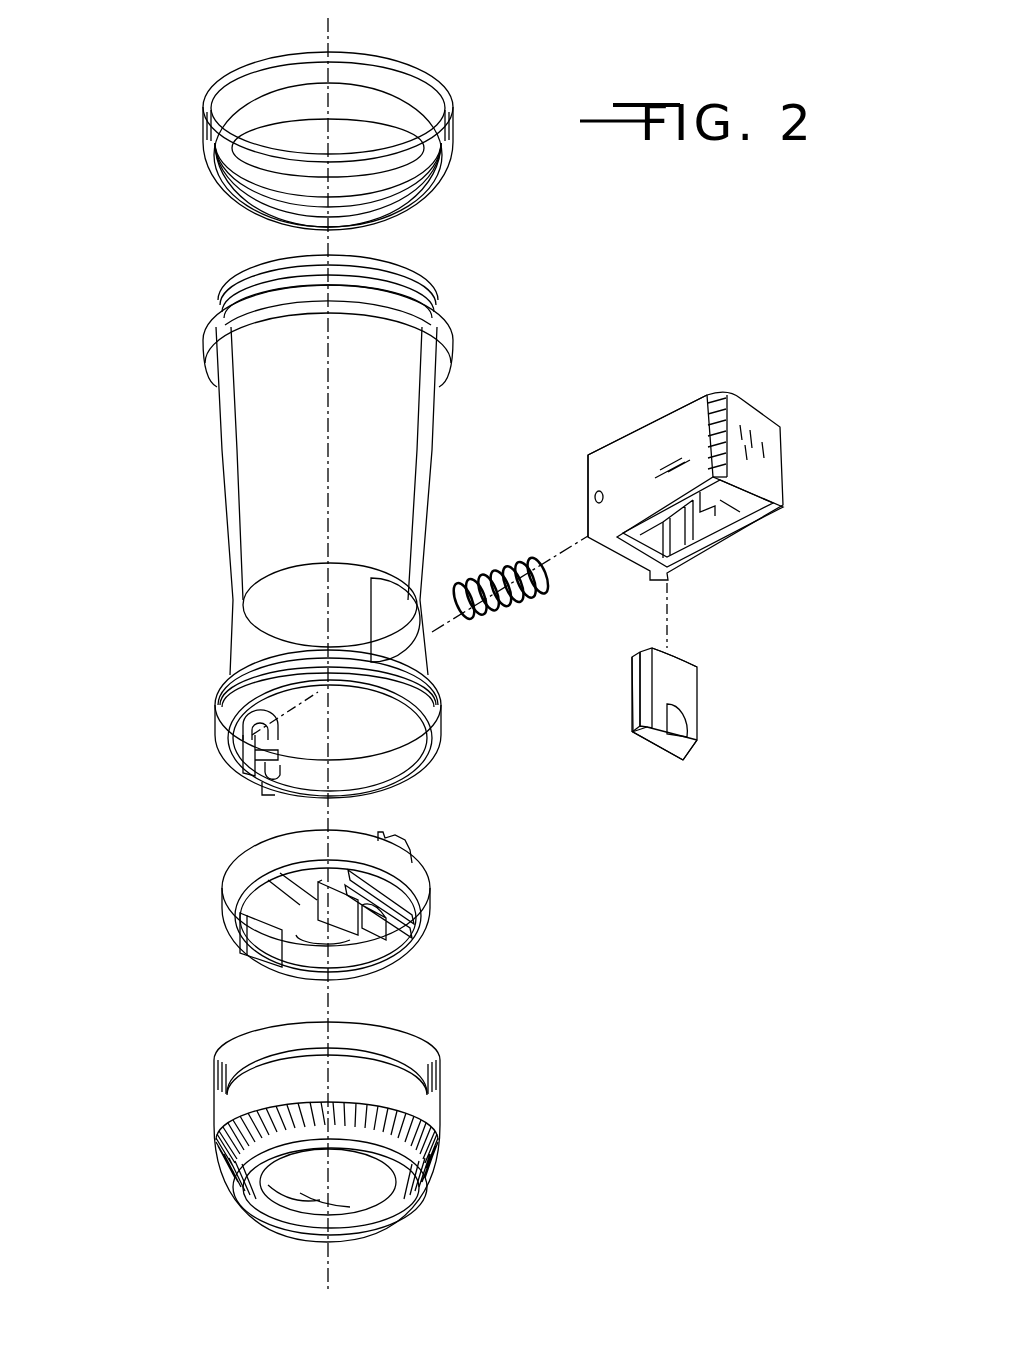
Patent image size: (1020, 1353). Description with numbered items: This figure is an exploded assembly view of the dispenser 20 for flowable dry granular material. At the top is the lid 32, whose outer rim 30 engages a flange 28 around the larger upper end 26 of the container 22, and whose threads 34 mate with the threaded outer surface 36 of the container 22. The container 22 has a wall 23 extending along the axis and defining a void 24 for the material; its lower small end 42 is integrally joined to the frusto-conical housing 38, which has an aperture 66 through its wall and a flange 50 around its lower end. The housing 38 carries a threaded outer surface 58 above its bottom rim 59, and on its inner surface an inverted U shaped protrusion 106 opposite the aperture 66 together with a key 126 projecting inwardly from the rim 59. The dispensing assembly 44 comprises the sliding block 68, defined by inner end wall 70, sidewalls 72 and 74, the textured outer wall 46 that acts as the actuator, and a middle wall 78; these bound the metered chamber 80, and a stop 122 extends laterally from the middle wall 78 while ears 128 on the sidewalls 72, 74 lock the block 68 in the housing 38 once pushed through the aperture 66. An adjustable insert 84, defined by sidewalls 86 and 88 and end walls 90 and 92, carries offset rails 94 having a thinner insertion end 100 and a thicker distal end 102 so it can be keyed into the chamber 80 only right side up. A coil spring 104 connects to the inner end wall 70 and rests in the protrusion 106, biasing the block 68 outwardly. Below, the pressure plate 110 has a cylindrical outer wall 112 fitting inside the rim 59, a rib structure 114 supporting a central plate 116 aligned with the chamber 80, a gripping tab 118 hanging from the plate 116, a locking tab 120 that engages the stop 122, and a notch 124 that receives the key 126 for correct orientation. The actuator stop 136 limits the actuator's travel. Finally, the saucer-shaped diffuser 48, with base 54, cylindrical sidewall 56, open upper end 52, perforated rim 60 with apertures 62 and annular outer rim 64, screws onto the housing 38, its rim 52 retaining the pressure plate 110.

The dispenser 20 is at (130, 165).
The container 22 is at (220, 505).
The wall 23 is at (226, 557).
The void 24 is at (350, 748).
The upper end 26 is at (440, 282).
The flange 28 is at (452, 346).
The outer rim 30 is at (455, 140).
The lid 32 is at (396, 72).
The threads 34 is at (398, 200).
The threaded outer surface 36 is at (243, 283).
The housing 38 is at (222, 640).
The lower small end 42 is at (418, 568).
The dispensing assembly 44 is at (552, 956).
The outer wall 46 is at (752, 425).
The diffuser member 48 is at (214, 1140).
The flange 50 is at (440, 700).
The open upper end 52 is at (432, 1040).
The base 54 is at (362, 1187).
The cylindrical sidewall 56 is at (437, 1147).
The threaded outer surface 58 is at (232, 730).
The rim 59 is at (228, 778).
The perforated rim 60 is at (436, 1196).
The apertures 62 is at (228, 1200).
The annular outer rim 64 is at (268, 1228).
The aperture 66 is at (368, 603).
The sliding block 68 is at (645, 422).
The inner end wall 70 is at (623, 545).
The sidewall 72 is at (610, 455).
The sidewall 74 is at (738, 546).
The middle wall 78 is at (690, 550).
The chamber 80 is at (650, 535).
The adjustable insert 84 is at (686, 697).
The sidewall 86 is at (632, 738).
The sidewall 88 is at (695, 710).
The end wall 90 is at (634, 712).
The end wall 92 is at (700, 740).
The rails 94 is at (640, 680).
The insertion end 100 is at (660, 655).
The distal end 102 is at (650, 750).
The coil spring 104 is at (515, 605).
The inverted U shaped protrusion 106 is at (333, 722).
The pressure plate 110 is at (213, 897).
The cylindrical outer wall 112 is at (415, 872).
The rib structure 114 is at (416, 950).
The plate 116 is at (312, 905).
The gripping tab 118 is at (337, 925).
The locking tab 120 is at (405, 833).
The stop 122 is at (770, 520).
The notch 124 is at (232, 940).
The key 126 is at (273, 793).
The ears 128 is at (593, 497).
The actuator stop 136 is at (738, 398).